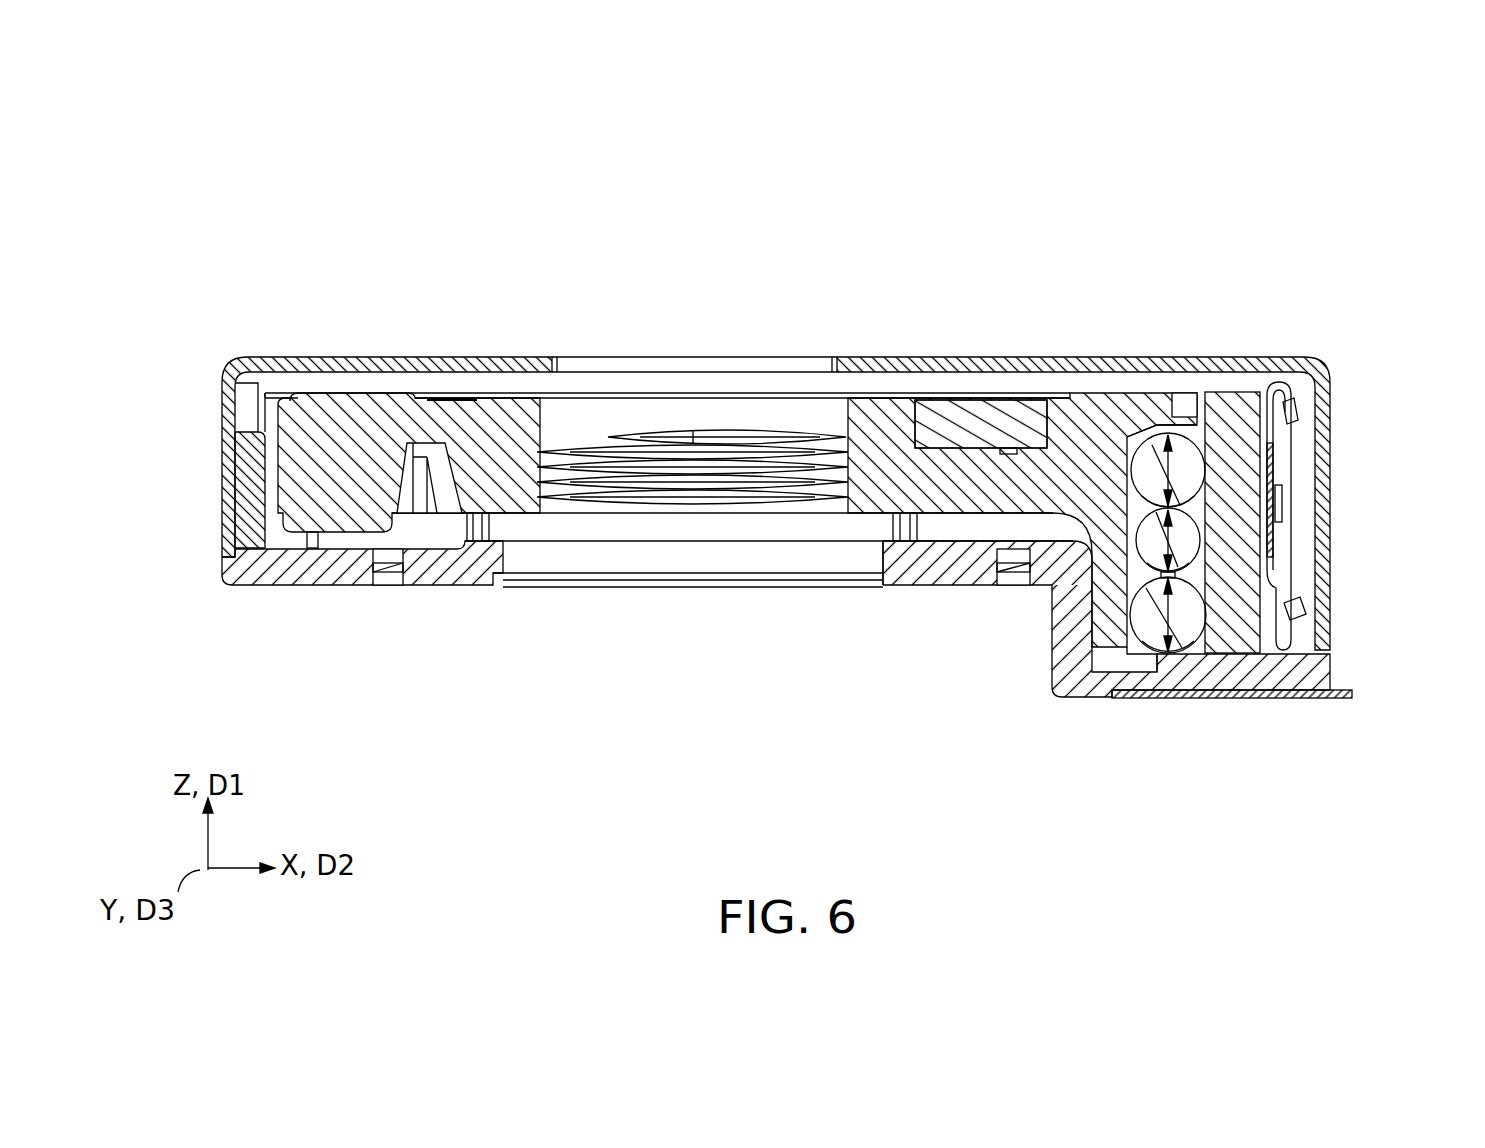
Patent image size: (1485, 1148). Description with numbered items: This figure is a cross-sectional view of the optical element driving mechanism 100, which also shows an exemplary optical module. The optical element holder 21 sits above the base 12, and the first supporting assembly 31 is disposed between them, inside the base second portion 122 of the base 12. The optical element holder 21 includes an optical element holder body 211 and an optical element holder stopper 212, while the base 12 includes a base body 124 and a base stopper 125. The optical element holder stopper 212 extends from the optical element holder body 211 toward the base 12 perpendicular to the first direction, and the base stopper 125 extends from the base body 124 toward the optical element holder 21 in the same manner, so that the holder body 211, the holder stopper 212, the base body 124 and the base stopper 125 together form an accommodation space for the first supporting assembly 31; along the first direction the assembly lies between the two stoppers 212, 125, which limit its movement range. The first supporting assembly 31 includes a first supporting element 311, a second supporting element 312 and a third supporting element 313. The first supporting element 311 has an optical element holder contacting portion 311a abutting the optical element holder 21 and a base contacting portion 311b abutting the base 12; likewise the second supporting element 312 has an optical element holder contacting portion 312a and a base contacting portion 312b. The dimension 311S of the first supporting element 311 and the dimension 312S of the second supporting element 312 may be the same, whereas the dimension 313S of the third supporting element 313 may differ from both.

The optical element driving mechanism 100 is at (205, 124).
The base 12 is at (468, 572).
The base second portion 122 is at (1363, 670).
The base body 124 is at (938, 565).
The base stopper 125 is at (1187, 680).
The optical element holder 21 is at (512, 425).
The optical element holder body 211 is at (880, 430).
The optical element holder stopper 212 is at (1158, 400).
The first supporting assembly 31 is at (1418, 70).
The first supporting assembly first supporting element 311 is at (1187, 457).
The optical element holder contacting portion 311a is at (1127, 437).
The base contacting portion 311b is at (1207, 468).
The dimension 311S is at (1175, 478).
The first supporting assembly second supporting element 312 is at (1190, 605).
The optical element holder contacting portion 312a is at (1135, 617).
The base contacting portion 312b is at (1207, 616).
The dimension 312S is at (1190, 603).
The first supporting assembly third supporting element 313 is at (1187, 527).
The dimension 313S is at (1180, 560).